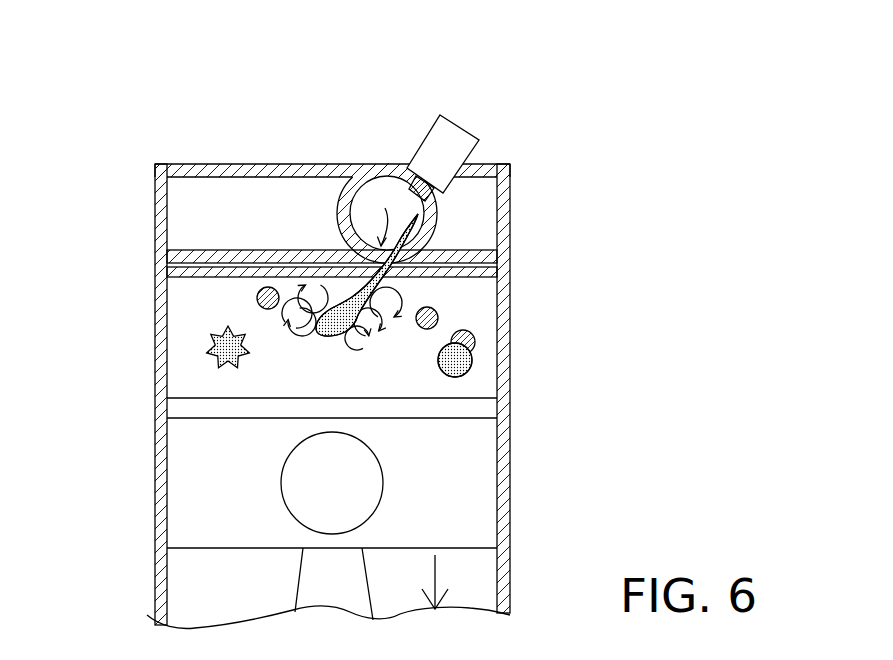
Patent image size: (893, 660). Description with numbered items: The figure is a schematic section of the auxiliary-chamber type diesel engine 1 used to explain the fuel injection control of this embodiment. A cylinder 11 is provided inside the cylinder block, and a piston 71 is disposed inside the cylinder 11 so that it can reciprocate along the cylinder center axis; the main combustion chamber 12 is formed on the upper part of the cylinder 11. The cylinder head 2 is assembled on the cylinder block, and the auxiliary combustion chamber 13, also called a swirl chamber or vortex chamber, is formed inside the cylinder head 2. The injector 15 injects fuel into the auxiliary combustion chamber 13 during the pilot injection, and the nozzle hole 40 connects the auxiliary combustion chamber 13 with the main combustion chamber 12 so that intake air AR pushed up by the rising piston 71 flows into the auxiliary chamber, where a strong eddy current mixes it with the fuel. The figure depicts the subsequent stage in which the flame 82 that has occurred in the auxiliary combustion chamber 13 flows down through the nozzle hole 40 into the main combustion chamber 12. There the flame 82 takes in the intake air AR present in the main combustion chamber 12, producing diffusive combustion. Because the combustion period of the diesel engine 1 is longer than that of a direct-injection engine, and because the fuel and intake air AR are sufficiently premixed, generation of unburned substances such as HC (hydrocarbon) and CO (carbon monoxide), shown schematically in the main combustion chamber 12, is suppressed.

The diesel engine 1 is at (230, 125).
The cylinder head 2 is at (157, 203).
The cylinder 11 is at (157, 572).
The main combustion chamber 12 is at (197, 302).
The auxiliary combustion chamber 13 is at (383, 201).
The injector 15 is at (450, 137).
The nozzle hole 40 is at (345, 192).
The piston 71 is at (463, 503).
The flame 82 is at (327, 337).
The intake air AR is at (440, 308).
The hydrocarbon HC is at (208, 347).
The carbon monoxide CO is at (467, 366).